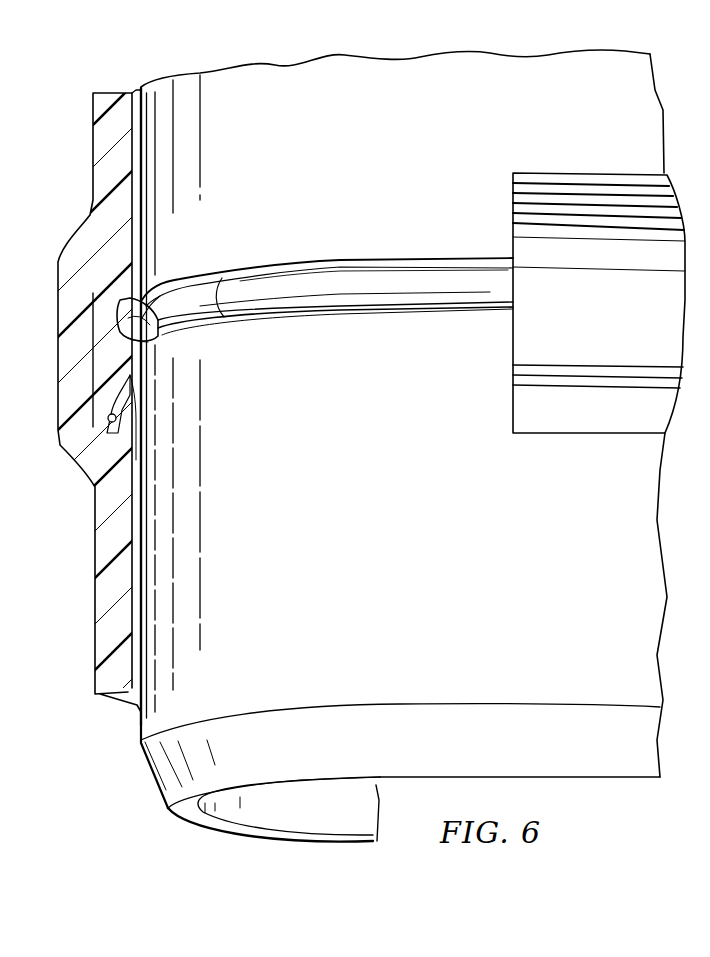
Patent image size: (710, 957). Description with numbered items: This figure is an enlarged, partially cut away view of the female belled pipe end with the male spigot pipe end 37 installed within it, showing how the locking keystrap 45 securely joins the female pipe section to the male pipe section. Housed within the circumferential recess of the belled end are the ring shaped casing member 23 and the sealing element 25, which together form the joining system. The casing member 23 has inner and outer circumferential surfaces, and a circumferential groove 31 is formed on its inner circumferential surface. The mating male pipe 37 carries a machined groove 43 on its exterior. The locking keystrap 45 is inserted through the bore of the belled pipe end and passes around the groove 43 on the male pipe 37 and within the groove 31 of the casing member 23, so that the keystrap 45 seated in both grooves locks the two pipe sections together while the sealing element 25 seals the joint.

The ring shaped casing member 23 is at (96, 298).
The sealing element 25 is at (95, 434).
The circumferential groove 31 is at (160, 338).
The male spigot pipe end 37 is at (141, 725).
The groove 43 is at (196, 302).
The locking keystrap 45 is at (295, 282).